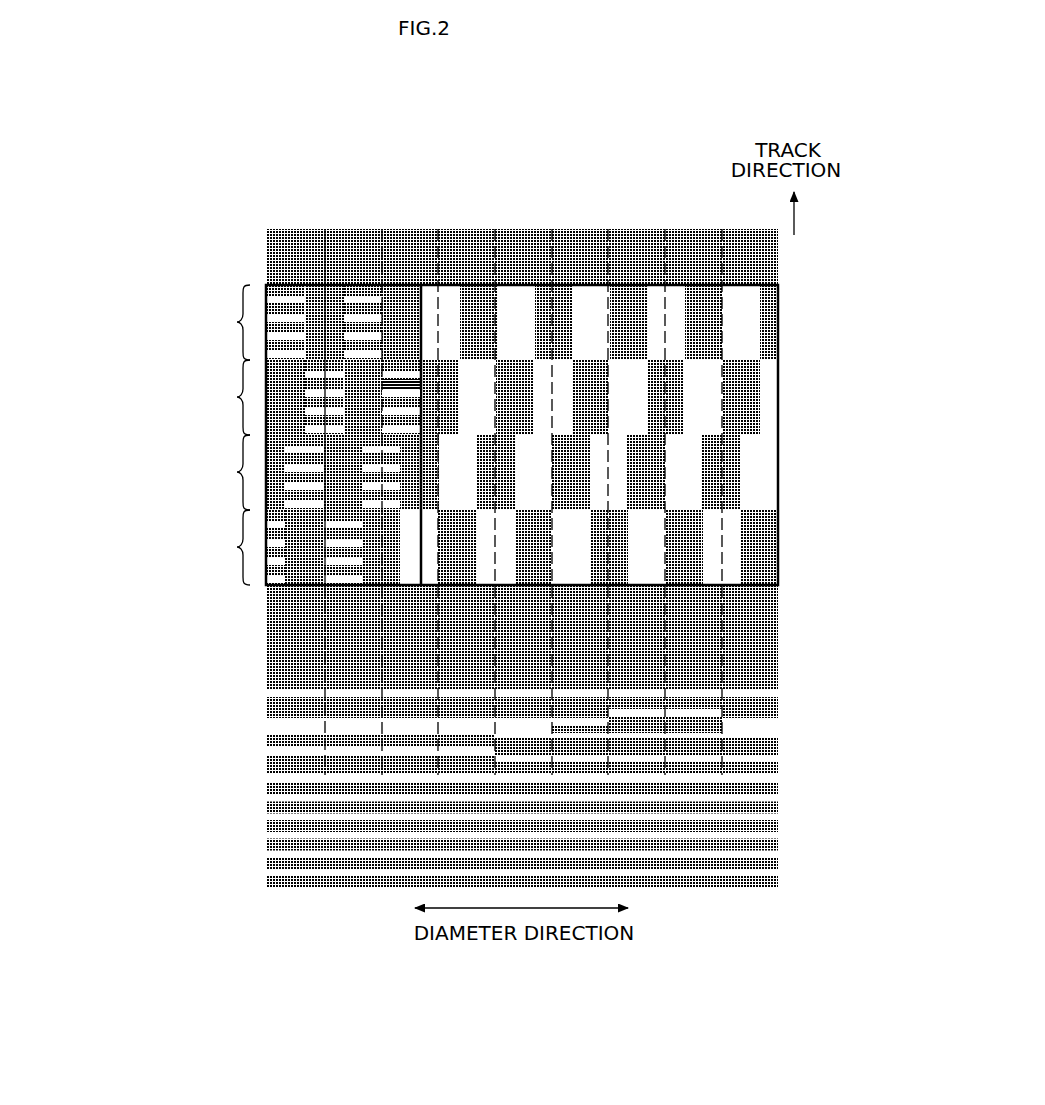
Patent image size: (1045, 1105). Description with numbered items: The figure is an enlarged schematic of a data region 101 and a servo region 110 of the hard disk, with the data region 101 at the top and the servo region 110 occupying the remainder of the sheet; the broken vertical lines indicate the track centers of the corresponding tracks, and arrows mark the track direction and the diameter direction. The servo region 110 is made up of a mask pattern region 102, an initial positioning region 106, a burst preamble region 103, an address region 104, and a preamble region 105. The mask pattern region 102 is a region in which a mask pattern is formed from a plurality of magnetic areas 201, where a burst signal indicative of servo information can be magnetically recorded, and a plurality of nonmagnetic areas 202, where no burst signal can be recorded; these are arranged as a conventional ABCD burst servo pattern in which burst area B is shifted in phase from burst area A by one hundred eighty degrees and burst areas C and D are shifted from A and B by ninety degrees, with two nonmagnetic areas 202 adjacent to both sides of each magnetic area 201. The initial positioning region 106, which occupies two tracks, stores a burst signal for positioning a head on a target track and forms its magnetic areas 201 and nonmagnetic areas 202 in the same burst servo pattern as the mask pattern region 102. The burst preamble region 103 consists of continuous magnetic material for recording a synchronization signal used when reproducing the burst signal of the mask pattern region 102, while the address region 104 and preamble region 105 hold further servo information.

The data region 101 is at (250, 285).
The mask pattern region 102 is at (655, 283).
The burst preamble region 103 is at (250, 688).
The address region 104 is at (250, 775).
The preamble region 105 is at (250, 892).
The initial positioning region 106 is at (400, 283).
The servo region 110 is at (90, 285).
The magnetic area 201 is at (406, 381).
The nonmagnetic area 202 is at (409, 408).